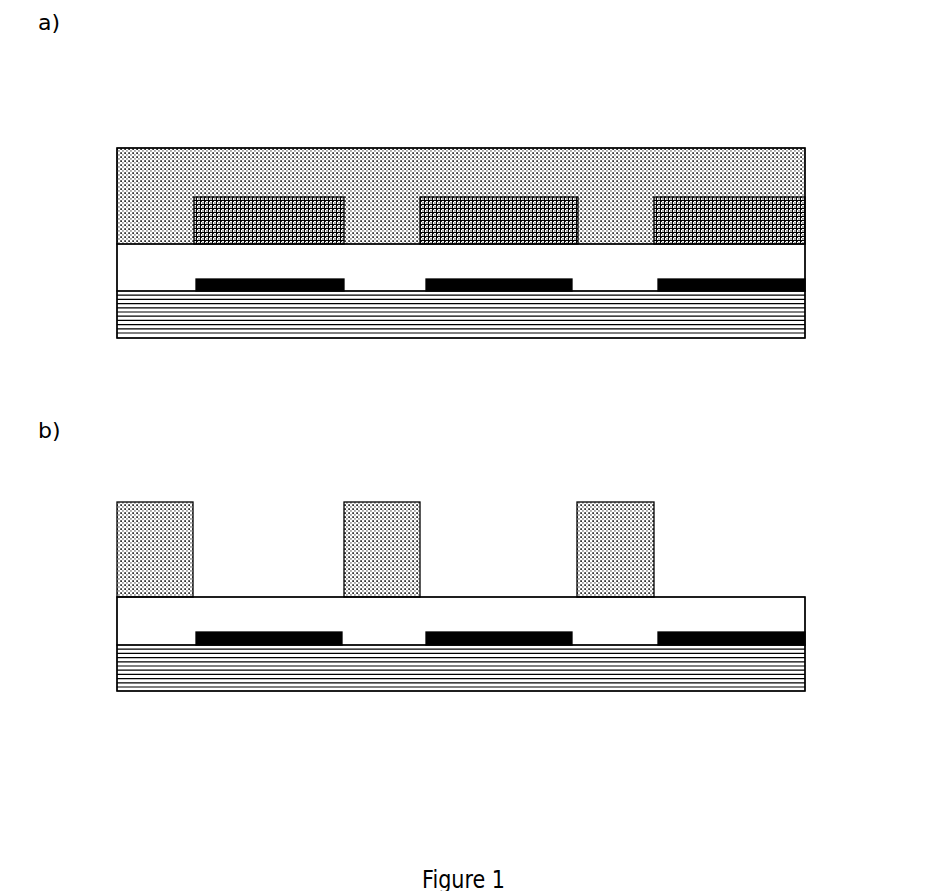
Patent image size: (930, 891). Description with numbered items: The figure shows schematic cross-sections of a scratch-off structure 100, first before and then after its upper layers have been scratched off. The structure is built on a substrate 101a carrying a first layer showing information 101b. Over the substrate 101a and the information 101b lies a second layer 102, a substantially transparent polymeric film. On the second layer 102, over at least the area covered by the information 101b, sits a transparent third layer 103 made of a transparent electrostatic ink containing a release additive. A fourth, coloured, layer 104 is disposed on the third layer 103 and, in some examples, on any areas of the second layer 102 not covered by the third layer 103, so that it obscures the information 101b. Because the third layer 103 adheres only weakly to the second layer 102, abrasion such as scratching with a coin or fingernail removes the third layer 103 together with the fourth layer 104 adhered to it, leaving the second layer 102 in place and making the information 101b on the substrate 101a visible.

The scratch-off structure 100 is at (215, 126).
The substrate 101a is at (707, 330).
The first layer showing information 101b is at (248, 299).
The second layer 102 is at (615, 260).
The third layer 103 is at (496, 205).
The fourth, coloured, layer 104 is at (384, 170).